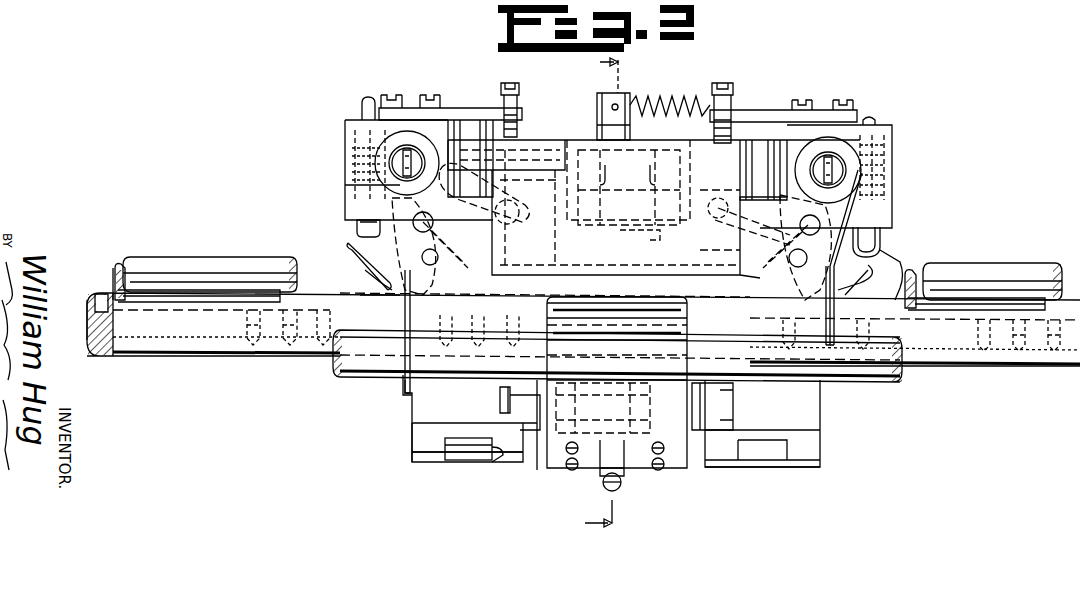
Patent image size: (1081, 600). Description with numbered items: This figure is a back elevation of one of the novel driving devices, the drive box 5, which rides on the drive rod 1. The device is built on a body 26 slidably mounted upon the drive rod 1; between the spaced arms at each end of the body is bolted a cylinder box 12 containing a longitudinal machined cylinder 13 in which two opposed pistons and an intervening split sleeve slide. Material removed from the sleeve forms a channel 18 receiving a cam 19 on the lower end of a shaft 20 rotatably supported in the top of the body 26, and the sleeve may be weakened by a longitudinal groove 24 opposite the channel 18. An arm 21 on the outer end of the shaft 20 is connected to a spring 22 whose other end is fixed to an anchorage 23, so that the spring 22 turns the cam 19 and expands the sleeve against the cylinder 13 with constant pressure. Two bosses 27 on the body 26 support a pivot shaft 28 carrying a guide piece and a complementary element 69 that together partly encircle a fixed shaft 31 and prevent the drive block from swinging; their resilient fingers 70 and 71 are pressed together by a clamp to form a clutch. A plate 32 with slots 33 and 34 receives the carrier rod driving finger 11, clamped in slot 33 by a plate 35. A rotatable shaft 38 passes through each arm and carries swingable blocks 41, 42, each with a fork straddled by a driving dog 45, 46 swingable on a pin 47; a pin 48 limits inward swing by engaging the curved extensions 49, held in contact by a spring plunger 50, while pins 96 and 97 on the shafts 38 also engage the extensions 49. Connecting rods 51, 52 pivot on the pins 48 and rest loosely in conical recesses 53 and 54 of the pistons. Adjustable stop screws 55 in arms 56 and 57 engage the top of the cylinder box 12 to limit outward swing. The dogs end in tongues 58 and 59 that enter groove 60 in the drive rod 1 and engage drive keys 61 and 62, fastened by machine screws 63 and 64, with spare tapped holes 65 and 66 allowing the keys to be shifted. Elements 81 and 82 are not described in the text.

The drive rod 1 is at (160, 353).
The drive box 5 is at (540, 136).
The carrier rod driving finger 11 is at (470, 460).
The cylinder box 12 is at (555, 140).
The cylinder 13 is at (642, 214).
The channel 18 is at (664, 187).
The cam 19 is at (598, 187).
The shaft 20 is at (632, 94).
The arm 21 is at (597, 101).
The spring 22 is at (672, 96).
The anchorage 23 is at (735, 97).
The longitudinal groove 24 is at (660, 259).
The body 26 is at (425, 411).
The bosses 27 is at (645, 401).
The pivot shaft 28 is at (735, 401).
The fixed shaft 31 is at (880, 378).
The plate 32 is at (418, 446).
The slot 33 is at (503, 458).
The slot 34 is at (760, 456).
The plate 35 is at (440, 462).
The rotatable shaft 38 is at (408, 150).
The block 41 is at (348, 126).
The block 42 is at (885, 134).
The driving dog 45 is at (348, 245).
The driving dog 46 is at (845, 276).
The pin 47 is at (438, 263).
The pin 48 is at (455, 259).
The curved extensions 49 is at (440, 229).
The spring plunger 50 is at (358, 229).
The connecting rod 51 is at (518, 211).
The connecting rod 52 is at (720, 201).
The conical recess 53 is at (522, 187).
The conical recess 54 is at (745, 238).
The adjustable stop screw 55 is at (508, 83).
The arm 56 is at (465, 108).
The arm 57 is at (755, 112).
The tongue 58 is at (388, 286).
The tongue 59 is at (860, 280).
The groove 60 is at (102, 294).
The drive key 61 is at (372, 299).
The drive key 62 is at (896, 275).
The machine screw 63 is at (287, 346).
The machine screw 64 is at (488, 326).
The tapped hole 65 is at (250, 344).
The tapped hole 66 is at (444, 323).
The complementary element 69 is at (550, 466).
The resilient finger 70 is at (682, 299).
The resilient finger 71 is at (687, 314).
The roller 81 is at (176, 263).
The roller end cap 82 is at (122, 265).
The pin 96 is at (352, 184).
The pin 97 is at (890, 201).